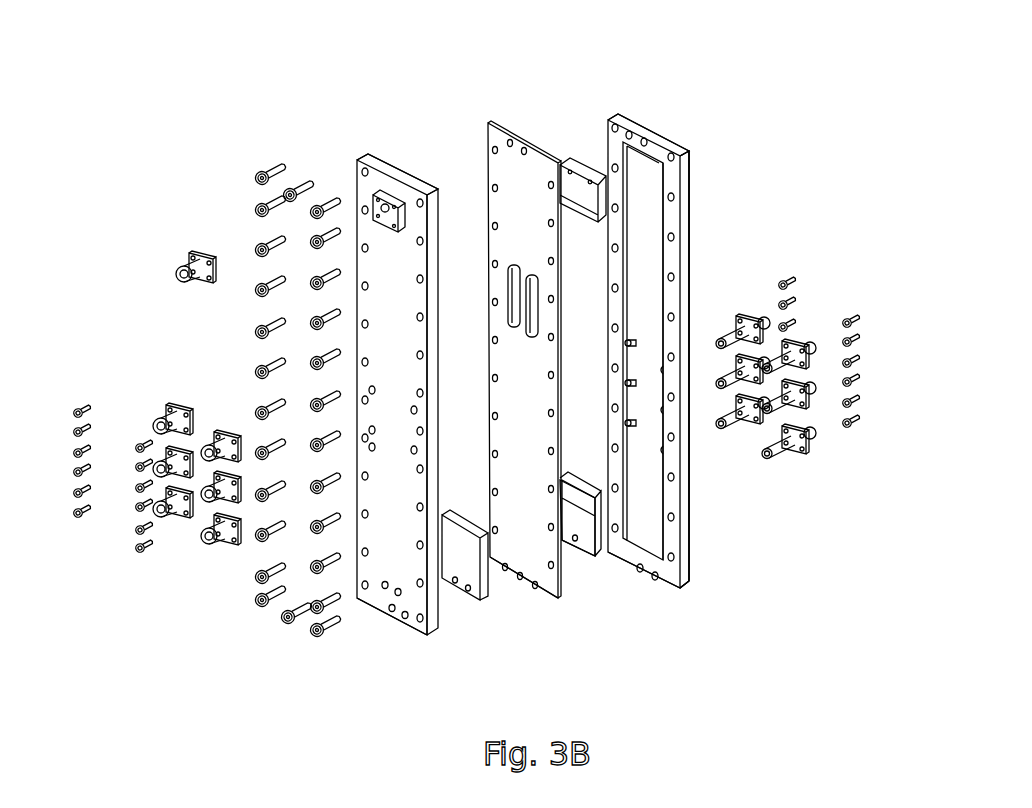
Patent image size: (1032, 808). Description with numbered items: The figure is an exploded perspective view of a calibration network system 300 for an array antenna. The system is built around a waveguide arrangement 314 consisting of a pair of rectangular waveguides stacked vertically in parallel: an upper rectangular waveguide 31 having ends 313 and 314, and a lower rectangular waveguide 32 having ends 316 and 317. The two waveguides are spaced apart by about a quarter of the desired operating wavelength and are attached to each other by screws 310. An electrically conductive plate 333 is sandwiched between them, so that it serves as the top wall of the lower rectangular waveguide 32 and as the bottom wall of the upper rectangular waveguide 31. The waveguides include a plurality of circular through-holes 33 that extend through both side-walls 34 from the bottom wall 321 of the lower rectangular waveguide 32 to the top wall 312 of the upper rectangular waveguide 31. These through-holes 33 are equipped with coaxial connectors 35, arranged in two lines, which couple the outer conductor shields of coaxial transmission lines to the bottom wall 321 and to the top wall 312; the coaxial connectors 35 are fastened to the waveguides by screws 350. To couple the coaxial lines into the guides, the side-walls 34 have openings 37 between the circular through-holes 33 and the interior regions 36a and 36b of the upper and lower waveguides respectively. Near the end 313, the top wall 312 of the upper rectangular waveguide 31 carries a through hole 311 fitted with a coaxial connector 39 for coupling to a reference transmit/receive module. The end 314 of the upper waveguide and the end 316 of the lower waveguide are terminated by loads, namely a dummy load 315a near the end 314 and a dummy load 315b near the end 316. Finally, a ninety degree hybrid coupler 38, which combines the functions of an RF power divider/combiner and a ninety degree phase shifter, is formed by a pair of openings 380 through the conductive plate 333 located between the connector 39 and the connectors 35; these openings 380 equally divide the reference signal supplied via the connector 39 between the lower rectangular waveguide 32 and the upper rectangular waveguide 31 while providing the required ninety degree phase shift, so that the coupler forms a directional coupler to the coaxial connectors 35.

The calibration network system 300 is at (350, 668).
The upper rectangular waveguide 31 is at (380, 170).
The screws 310 is at (256, 250).
The through hole 311 is at (390, 187).
The top wall 312 is at (445, 585).
The end 313 is at (350, 157).
The end 314 is at (412, 648).
The dummy load 315a is at (498, 590).
The dummy load 315b is at (592, 550).
The end 316 is at (702, 598).
The end 317 is at (640, 98).
The lower rectangular waveguide 32 is at (657, 128).
The bottom wall 321 is at (690, 182).
The circular through-holes 33 is at (497, 430).
The electrically conductive plate 333 is at (524, 133).
The side-walls 34 is at (690, 508).
The coaxial connectors 35 is at (229, 545).
The screws 350 is at (138, 488).
The interior region 36a is at (431, 462).
The interior region 36b is at (645, 432).
The openings 37 is at (362, 392).
The 90 degree hybrid coupler 38 is at (512, 258).
The openings 380 is at (531, 278).
The coaxial connector 39 is at (176, 262).